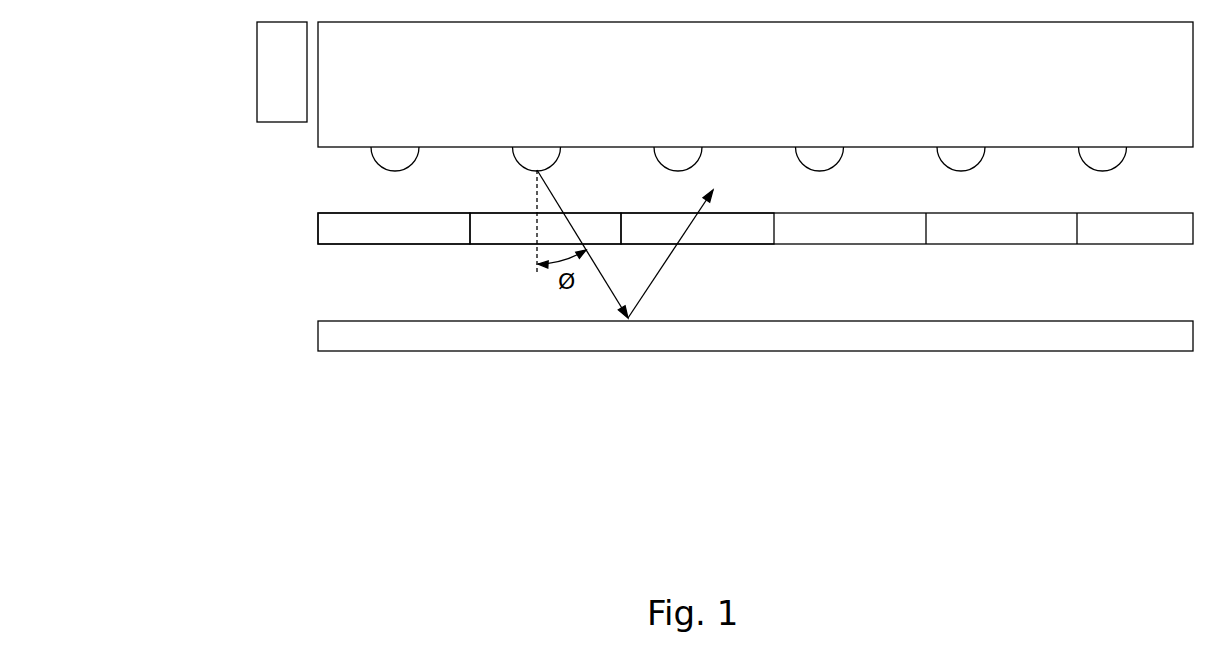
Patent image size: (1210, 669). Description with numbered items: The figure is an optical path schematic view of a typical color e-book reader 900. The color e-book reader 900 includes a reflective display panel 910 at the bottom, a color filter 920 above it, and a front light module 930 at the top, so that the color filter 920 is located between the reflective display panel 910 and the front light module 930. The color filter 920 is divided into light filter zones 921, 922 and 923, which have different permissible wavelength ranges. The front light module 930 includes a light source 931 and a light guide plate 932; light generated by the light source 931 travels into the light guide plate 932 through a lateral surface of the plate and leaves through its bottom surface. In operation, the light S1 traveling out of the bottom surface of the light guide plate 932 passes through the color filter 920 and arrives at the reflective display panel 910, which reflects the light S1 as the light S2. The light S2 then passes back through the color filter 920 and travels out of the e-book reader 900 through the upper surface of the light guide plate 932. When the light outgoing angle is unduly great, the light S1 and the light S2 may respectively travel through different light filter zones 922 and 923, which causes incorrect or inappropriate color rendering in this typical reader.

The color e-book reader 900 is at (112, 88).
The front light module 930 is at (182, 62).
The light source 931 is at (267, 82).
The light guide plate 932 is at (318, 147).
The color filter 920 is at (650, 301).
The light filter zone 921 is at (382, 233).
The light filter zone 922 is at (505, 233).
The light filter zone 923 is at (757, 237).
The reflective display panel 910 is at (313, 340).
The light S1 is at (627, 303).
The light S2 is at (647, 297).